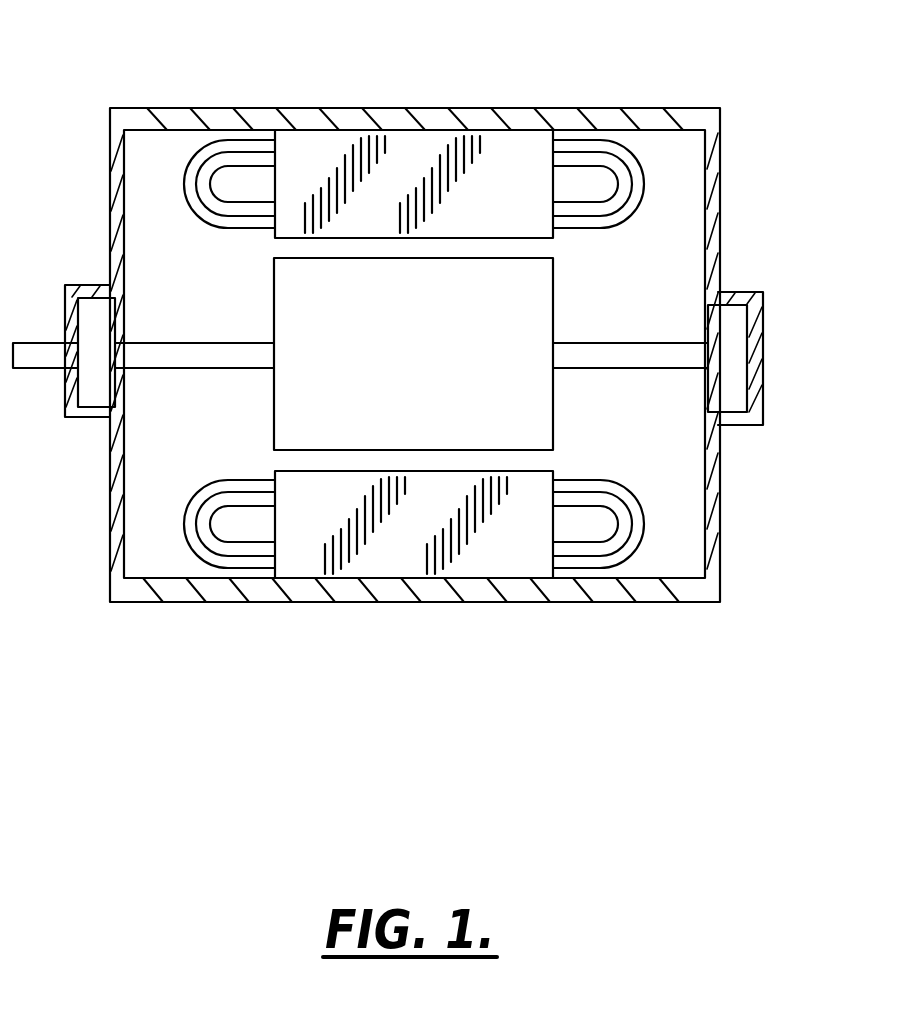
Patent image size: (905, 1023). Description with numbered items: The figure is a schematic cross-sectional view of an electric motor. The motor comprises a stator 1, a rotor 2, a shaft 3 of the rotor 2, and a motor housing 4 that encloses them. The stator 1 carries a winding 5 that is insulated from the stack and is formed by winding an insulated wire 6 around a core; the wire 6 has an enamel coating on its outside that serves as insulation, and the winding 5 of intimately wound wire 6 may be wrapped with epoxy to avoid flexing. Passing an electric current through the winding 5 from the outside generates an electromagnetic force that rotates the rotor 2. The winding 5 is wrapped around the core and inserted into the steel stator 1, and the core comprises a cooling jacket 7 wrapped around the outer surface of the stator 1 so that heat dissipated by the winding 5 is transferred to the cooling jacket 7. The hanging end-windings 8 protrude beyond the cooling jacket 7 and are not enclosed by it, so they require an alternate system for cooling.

The stator 1 is at (539, 321).
The rotor 2 is at (530, 430).
The shaft 3 is at (643, 345).
The motor housing 4 is at (295, 107).
The winding 5 is at (632, 158).
The insulated wire 6 is at (206, 194).
The cooling jacket 7 is at (405, 172).
The end-winding 8 is at (208, 172).